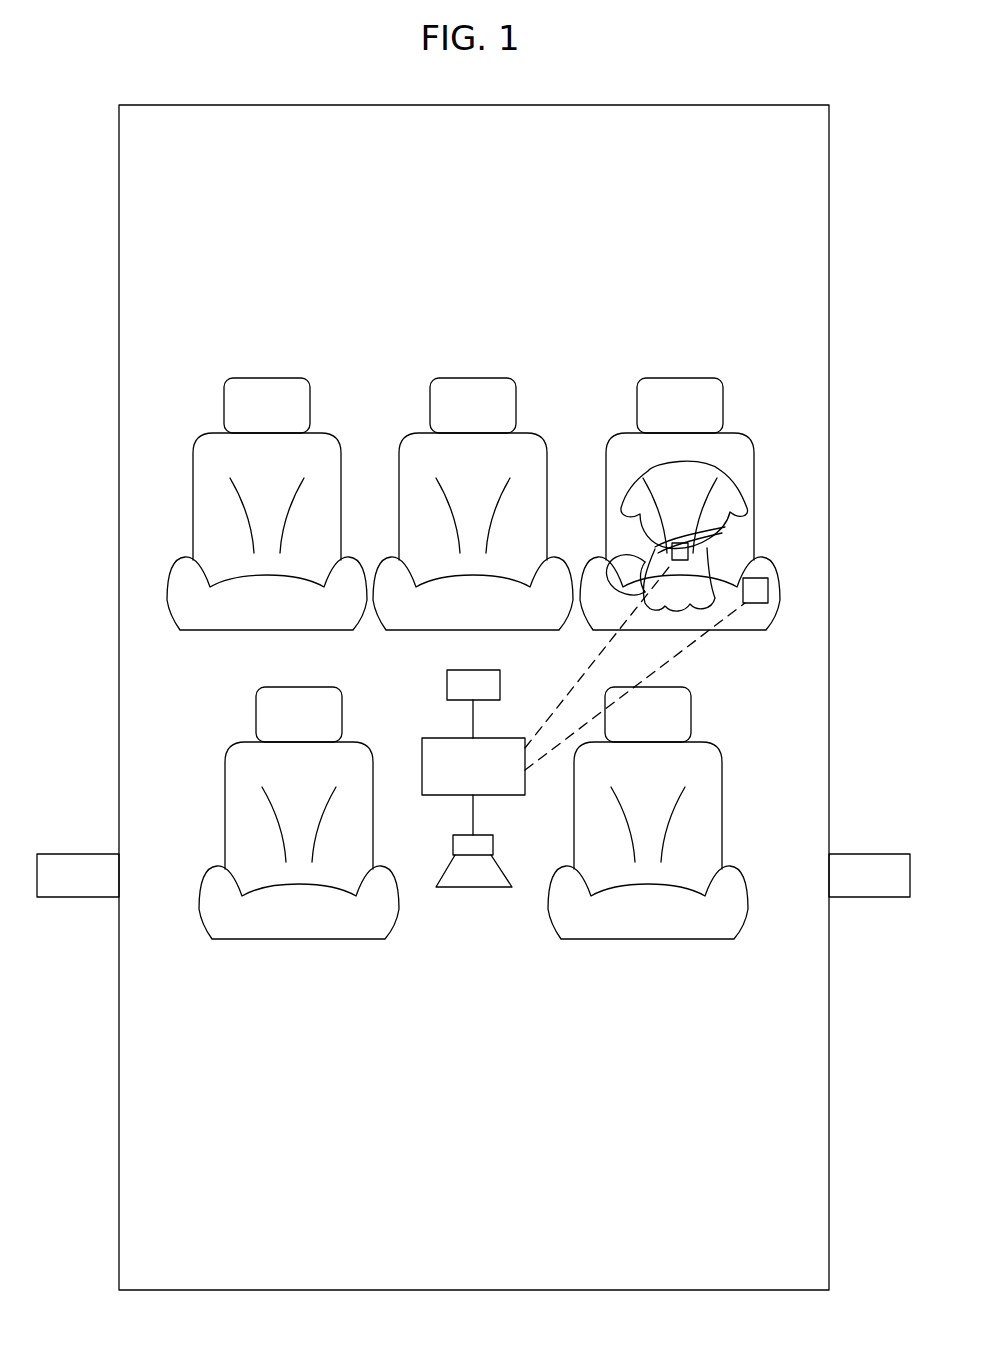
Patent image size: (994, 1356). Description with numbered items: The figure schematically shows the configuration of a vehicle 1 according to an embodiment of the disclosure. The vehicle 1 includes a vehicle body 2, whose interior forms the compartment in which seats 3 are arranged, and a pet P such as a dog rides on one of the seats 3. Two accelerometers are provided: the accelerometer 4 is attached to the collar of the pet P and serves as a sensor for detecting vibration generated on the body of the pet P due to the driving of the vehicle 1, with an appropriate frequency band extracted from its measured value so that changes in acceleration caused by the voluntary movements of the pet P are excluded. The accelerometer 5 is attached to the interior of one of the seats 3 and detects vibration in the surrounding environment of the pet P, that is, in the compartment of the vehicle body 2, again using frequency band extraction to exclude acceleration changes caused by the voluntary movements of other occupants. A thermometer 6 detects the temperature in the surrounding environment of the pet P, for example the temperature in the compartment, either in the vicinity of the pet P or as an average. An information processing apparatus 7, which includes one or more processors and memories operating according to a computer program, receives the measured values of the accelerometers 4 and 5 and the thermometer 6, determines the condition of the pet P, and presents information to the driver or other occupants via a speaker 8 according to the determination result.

The vehicle 1 is at (783, 103).
The vehicle body 2 is at (830, 130).
The seats 3 is at (681, 378).
The pet P is at (735, 470).
The accelerometer 4 is at (713, 528).
The accelerometer 5 is at (770, 590).
The thermometer 6 is at (447, 685).
The information processing apparatus 7 is at (442, 738).
The speaker 8 is at (453, 850).